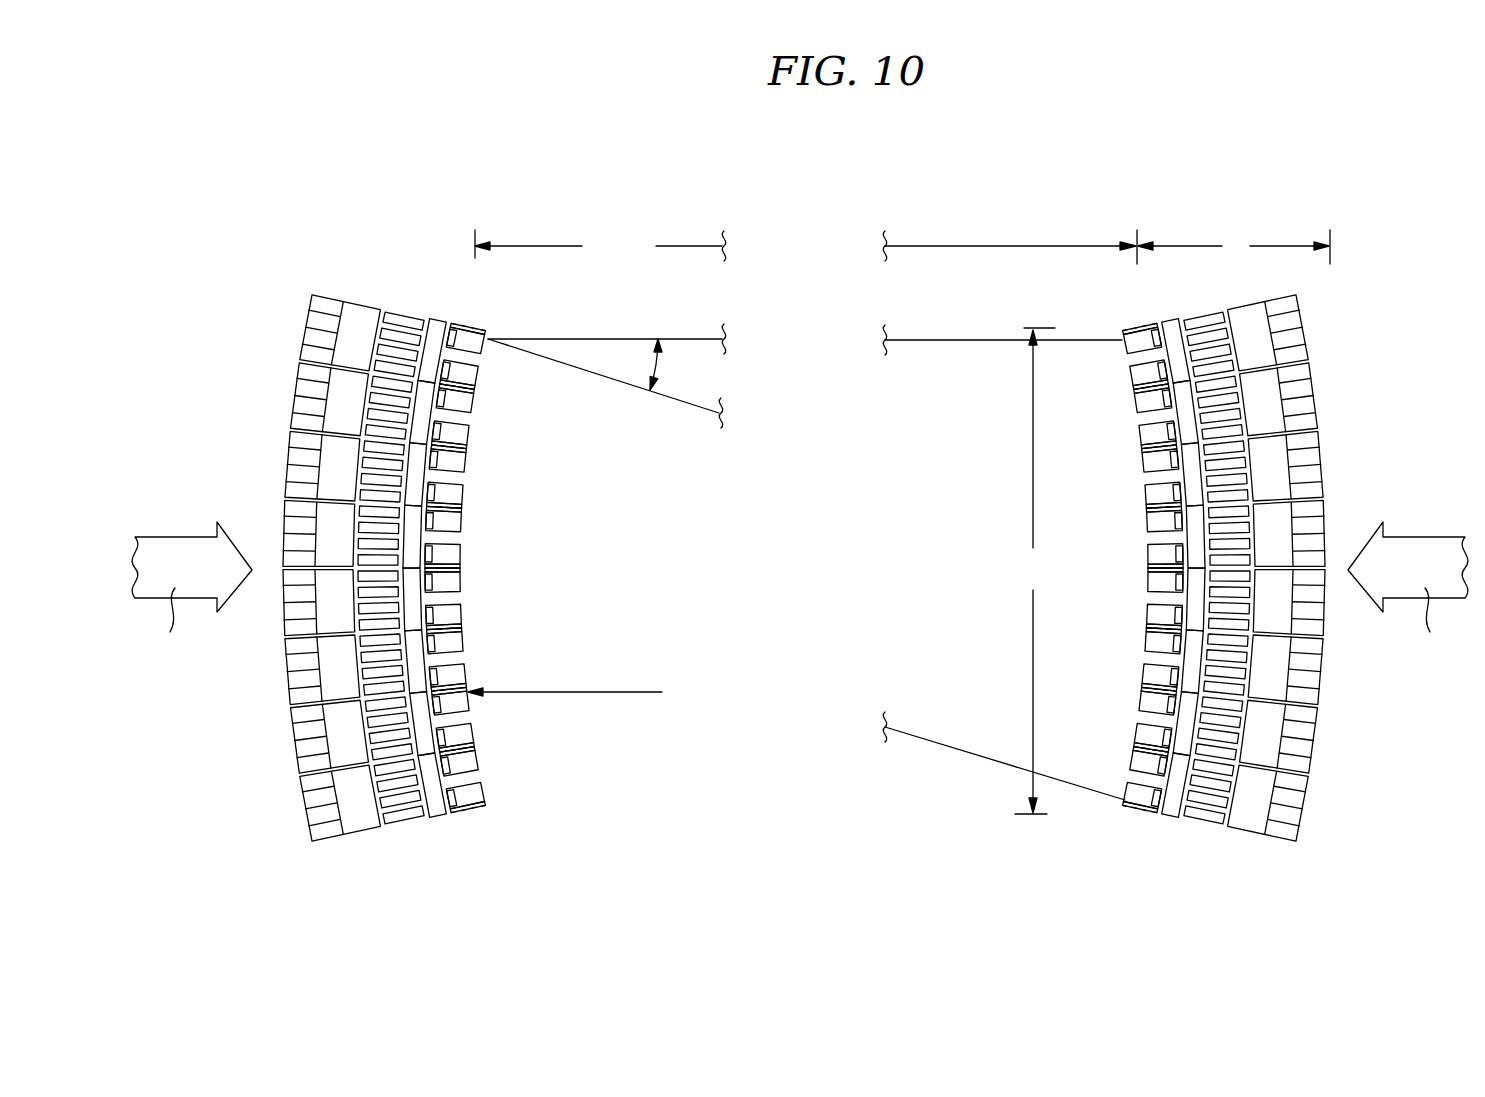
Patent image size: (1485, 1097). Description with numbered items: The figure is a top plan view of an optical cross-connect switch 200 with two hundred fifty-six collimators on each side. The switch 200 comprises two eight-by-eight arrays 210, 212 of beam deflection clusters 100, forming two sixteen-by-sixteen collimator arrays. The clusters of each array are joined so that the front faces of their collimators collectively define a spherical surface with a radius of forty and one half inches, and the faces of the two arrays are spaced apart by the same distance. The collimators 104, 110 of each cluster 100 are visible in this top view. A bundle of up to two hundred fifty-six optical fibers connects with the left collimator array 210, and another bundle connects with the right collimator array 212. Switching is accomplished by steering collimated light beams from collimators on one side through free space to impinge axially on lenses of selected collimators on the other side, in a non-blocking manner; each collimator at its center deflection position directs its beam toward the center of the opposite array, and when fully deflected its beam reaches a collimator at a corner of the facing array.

The beam deflection cluster 100 is at (360, 320).
The collimator 104 is at (460, 438).
The collimator 110 is at (458, 402).
The optical cross-connect switch 200 is at (566, 198).
The left collimator array 210 is at (440, 822).
The right collimator array 212 is at (1162, 823).